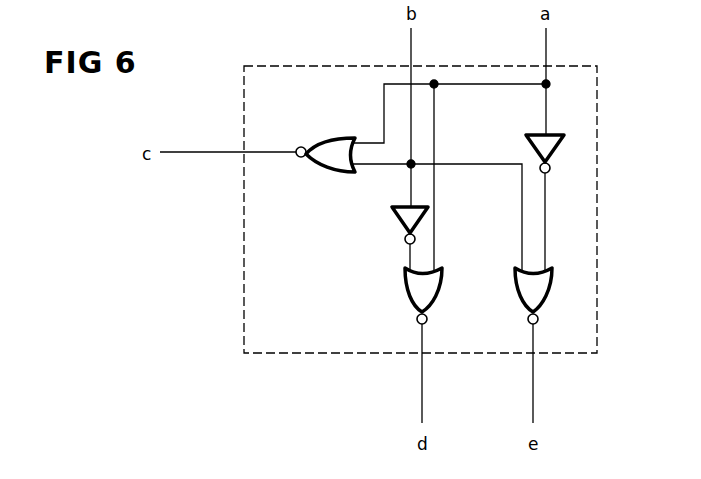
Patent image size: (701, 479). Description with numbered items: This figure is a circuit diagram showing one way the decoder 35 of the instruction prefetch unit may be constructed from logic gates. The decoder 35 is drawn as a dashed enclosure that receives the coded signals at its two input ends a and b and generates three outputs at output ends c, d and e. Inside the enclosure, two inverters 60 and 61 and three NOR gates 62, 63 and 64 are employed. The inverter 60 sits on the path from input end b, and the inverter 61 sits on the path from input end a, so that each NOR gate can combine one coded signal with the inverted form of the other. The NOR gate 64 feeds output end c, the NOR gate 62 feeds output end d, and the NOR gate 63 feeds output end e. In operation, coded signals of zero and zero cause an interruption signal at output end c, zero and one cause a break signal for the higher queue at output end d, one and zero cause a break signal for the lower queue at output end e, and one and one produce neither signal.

The decoder 35 is at (598, 108).
The inverter 60 is at (397, 216).
The inverter 61 is at (555, 134).
The NOR gate 62 is at (441, 290).
The NOR gate 63 is at (552, 290).
The NOR gate 64 is at (330, 135).